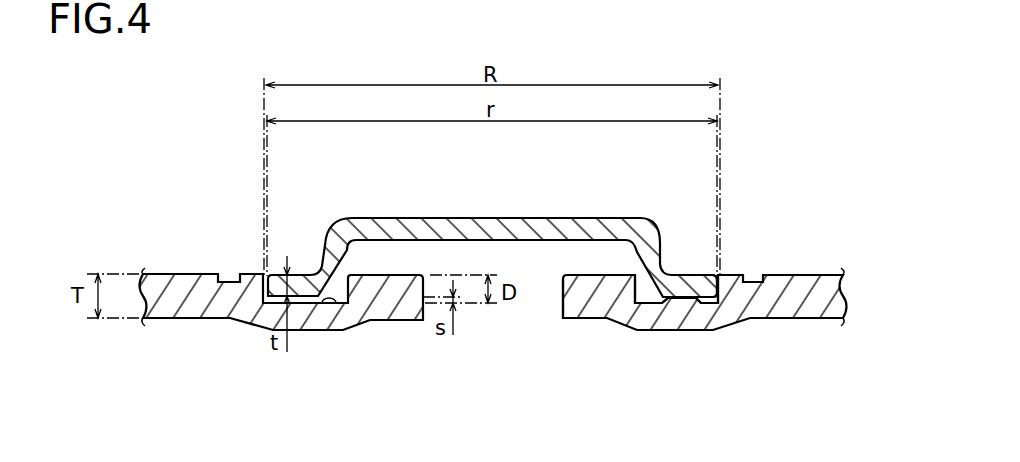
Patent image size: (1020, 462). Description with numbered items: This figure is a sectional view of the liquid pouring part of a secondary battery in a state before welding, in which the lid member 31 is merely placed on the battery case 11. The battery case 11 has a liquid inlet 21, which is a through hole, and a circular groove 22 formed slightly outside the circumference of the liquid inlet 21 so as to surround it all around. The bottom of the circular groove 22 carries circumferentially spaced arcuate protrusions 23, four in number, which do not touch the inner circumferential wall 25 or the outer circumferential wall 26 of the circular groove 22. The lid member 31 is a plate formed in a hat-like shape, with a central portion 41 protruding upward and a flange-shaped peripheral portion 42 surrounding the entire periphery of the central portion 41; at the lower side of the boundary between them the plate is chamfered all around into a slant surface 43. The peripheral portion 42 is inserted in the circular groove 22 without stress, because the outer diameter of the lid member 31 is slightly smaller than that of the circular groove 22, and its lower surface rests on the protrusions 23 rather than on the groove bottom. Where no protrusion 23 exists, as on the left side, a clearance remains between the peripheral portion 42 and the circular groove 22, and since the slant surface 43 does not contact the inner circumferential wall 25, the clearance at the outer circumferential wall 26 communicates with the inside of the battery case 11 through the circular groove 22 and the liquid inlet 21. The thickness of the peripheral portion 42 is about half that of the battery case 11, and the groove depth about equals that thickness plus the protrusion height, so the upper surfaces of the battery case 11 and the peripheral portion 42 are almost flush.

The battery case 11 is at (797, 282).
The liquid inlet 21 is at (549, 305).
The circular groove 22 is at (323, 305).
The protrusions 23 is at (677, 300).
The inner circumferential wall 25 is at (640, 303).
The outer circumferential wall 26 is at (719, 300).
The lid member 31 is at (614, 214).
The central portion 41 is at (417, 222).
The peripheral portion 42 is at (697, 282).
The slant surface 43 is at (624, 288).